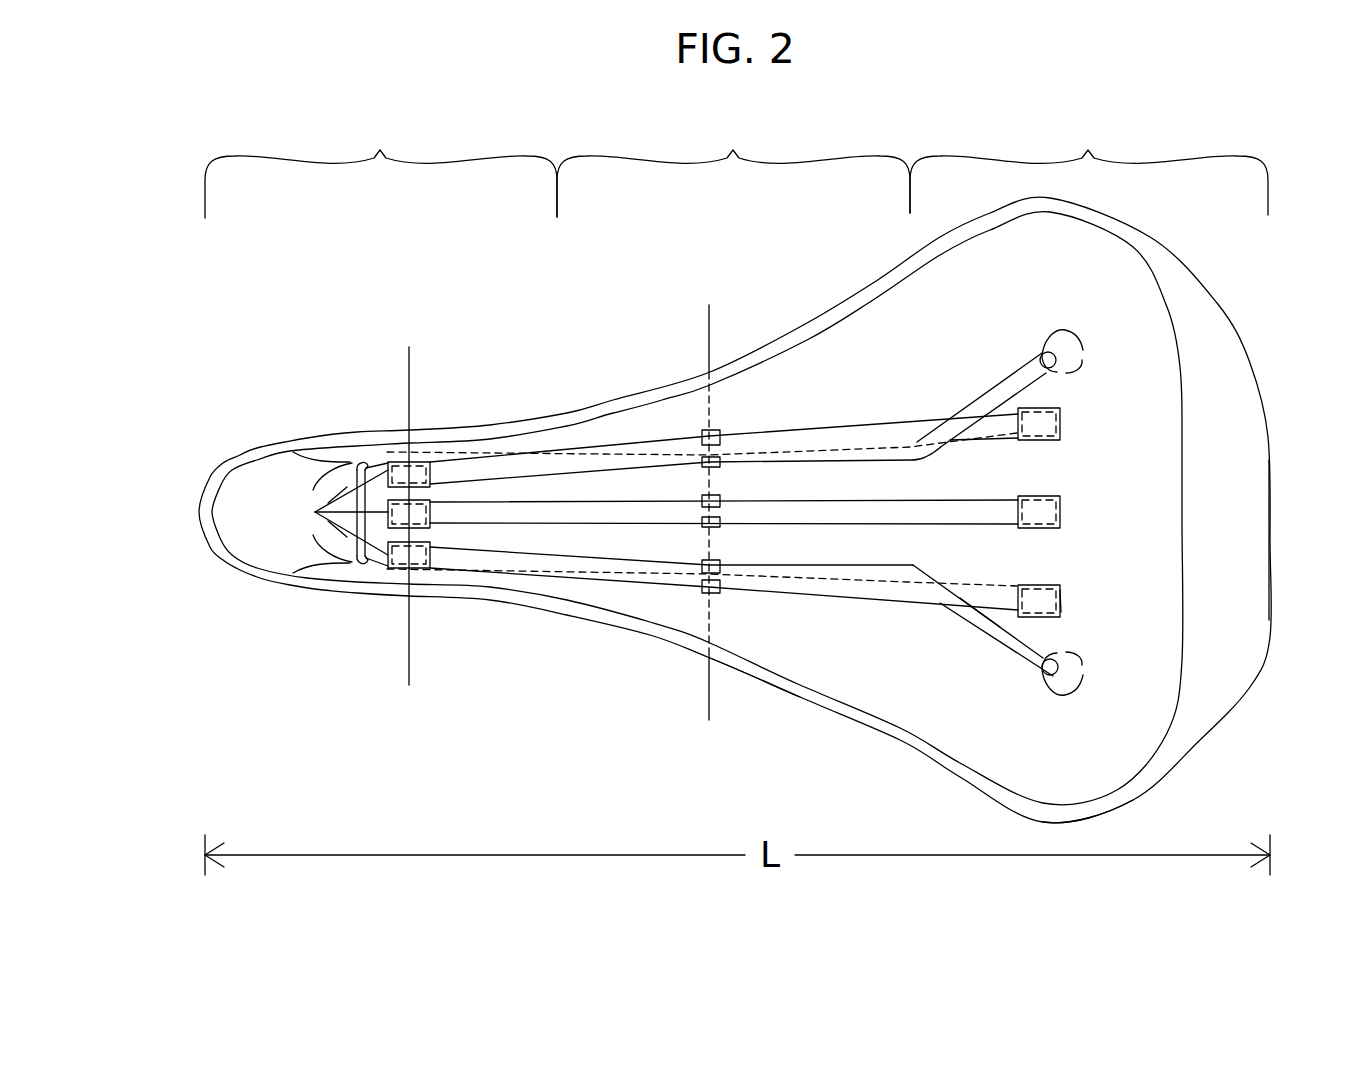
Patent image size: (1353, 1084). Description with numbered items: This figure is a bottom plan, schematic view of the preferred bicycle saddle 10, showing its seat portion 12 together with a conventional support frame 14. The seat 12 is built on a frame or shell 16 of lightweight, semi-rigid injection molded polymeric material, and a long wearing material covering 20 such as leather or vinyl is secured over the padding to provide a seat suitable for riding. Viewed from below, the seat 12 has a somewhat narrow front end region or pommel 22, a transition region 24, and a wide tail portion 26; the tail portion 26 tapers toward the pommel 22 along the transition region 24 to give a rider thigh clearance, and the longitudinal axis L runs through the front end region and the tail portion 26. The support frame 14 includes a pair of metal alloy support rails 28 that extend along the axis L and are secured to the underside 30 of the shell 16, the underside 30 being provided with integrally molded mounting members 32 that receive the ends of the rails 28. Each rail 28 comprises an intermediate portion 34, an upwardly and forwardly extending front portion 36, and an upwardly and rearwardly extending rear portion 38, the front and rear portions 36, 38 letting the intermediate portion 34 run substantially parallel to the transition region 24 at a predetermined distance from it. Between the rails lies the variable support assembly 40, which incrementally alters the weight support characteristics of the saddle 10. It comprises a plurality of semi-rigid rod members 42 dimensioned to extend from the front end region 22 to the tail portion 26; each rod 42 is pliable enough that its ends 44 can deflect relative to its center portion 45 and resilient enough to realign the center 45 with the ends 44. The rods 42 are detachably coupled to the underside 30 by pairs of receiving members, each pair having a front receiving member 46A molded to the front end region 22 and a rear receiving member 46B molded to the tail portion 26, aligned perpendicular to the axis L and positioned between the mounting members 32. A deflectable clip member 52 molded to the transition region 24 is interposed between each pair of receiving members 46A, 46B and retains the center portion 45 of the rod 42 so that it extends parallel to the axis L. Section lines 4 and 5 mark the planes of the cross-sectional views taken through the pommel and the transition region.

The bicycle saddle 10 is at (1245, 315).
The seat portion 12 is at (1297, 515).
The support frame 14 is at (1005, 652).
The shell 16 is at (1118, 762).
The material covering 20 is at (1255, 605).
The front end region 22 is at (381, 163).
The transition region 24 is at (733, 163).
The tail portion 26 is at (1089, 163).
The support rails 28 is at (983, 393).
The underside 30 is at (893, 705).
The mounting members 32 is at (340, 548).
The intermediate portion 34 is at (873, 452).
The front portion 36 is at (375, 463).
The rear portion 38 is at (1035, 355).
The variable support assembly 40 is at (1100, 468).
The rod members 42 is at (950, 513).
The ends 44 is at (1027, 430).
The center portion 45 is at (697, 455).
The front receiving member 46A is at (327, 512).
The rear receiving member 46B is at (1062, 588).
The clip members 52 is at (718, 435).
The section line 4- 4 is at (412, 392).
The section line 5- 5 is at (707, 333).